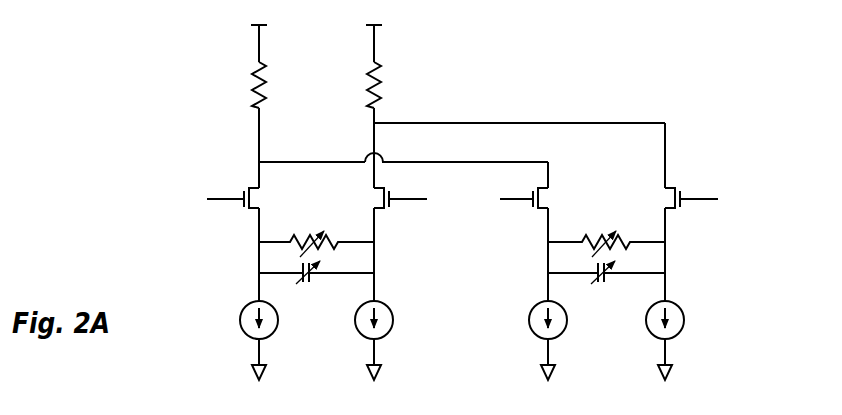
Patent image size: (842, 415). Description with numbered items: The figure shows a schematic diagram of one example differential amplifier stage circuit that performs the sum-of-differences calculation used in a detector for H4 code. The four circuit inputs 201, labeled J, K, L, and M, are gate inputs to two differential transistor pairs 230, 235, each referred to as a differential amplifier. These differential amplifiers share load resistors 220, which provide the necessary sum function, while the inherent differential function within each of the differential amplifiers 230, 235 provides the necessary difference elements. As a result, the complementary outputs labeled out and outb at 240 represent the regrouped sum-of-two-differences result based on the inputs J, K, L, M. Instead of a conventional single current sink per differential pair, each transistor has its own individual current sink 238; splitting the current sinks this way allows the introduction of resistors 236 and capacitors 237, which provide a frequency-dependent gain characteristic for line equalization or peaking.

The circuit inputs 201 is at (178, 205).
The load resistors 220 is at (353, 93).
The differential transistor pair 230 is at (360, 197).
The differential transistor pair 235 is at (558, 204).
The resistors 236 is at (566, 242).
The capacitors 237 is at (581, 264).
The per-transistor current sinks 238 is at (643, 331).
The complementary outputs 240 is at (517, 150).